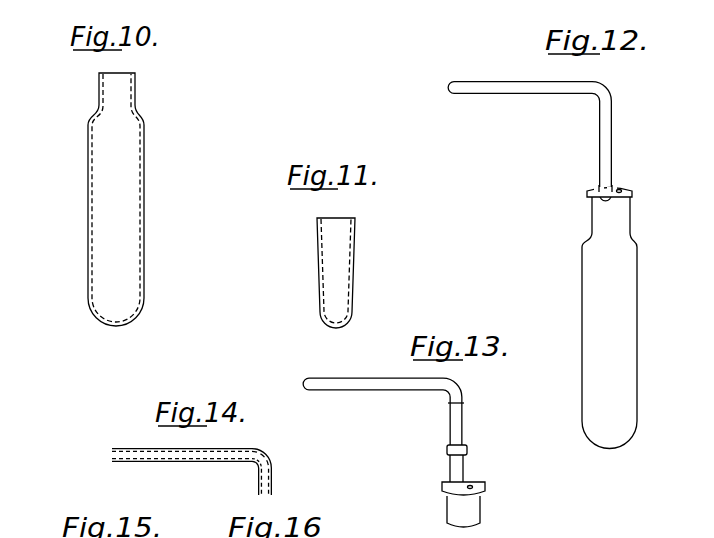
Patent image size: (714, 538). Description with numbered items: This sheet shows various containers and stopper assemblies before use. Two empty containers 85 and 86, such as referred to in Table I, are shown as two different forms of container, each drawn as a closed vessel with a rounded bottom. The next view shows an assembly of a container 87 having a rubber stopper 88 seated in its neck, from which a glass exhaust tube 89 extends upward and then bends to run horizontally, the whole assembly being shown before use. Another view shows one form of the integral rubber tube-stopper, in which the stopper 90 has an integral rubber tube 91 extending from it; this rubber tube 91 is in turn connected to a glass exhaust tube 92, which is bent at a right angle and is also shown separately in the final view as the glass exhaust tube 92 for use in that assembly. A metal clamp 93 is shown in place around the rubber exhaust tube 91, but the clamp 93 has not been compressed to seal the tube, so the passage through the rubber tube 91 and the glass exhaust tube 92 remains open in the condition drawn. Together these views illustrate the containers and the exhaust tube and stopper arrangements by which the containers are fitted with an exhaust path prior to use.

In FIG. 10, the container 85 is at (87, 200).
In FIG. 11, the container 86 is at (318, 266).
In FIG. 12, the container 87 is at (628, 329).
In FIG. 12, the rubber stopper 88 is at (633, 193).
In FIG. 12, the glass exhaust tube 89 is at (605, 135).
In FIG. 13, the stopper 90 is at (476, 508).
In FIG. 13, the rubber tube 91 is at (463, 467).
In FIG. 13, the glass exhaust tube 92 is at (411, 385).
In FIG. 14, the glass exhaust tube 92 is at (174, 462).
In FIG. 13, the metal clamp 93 is at (468, 451).